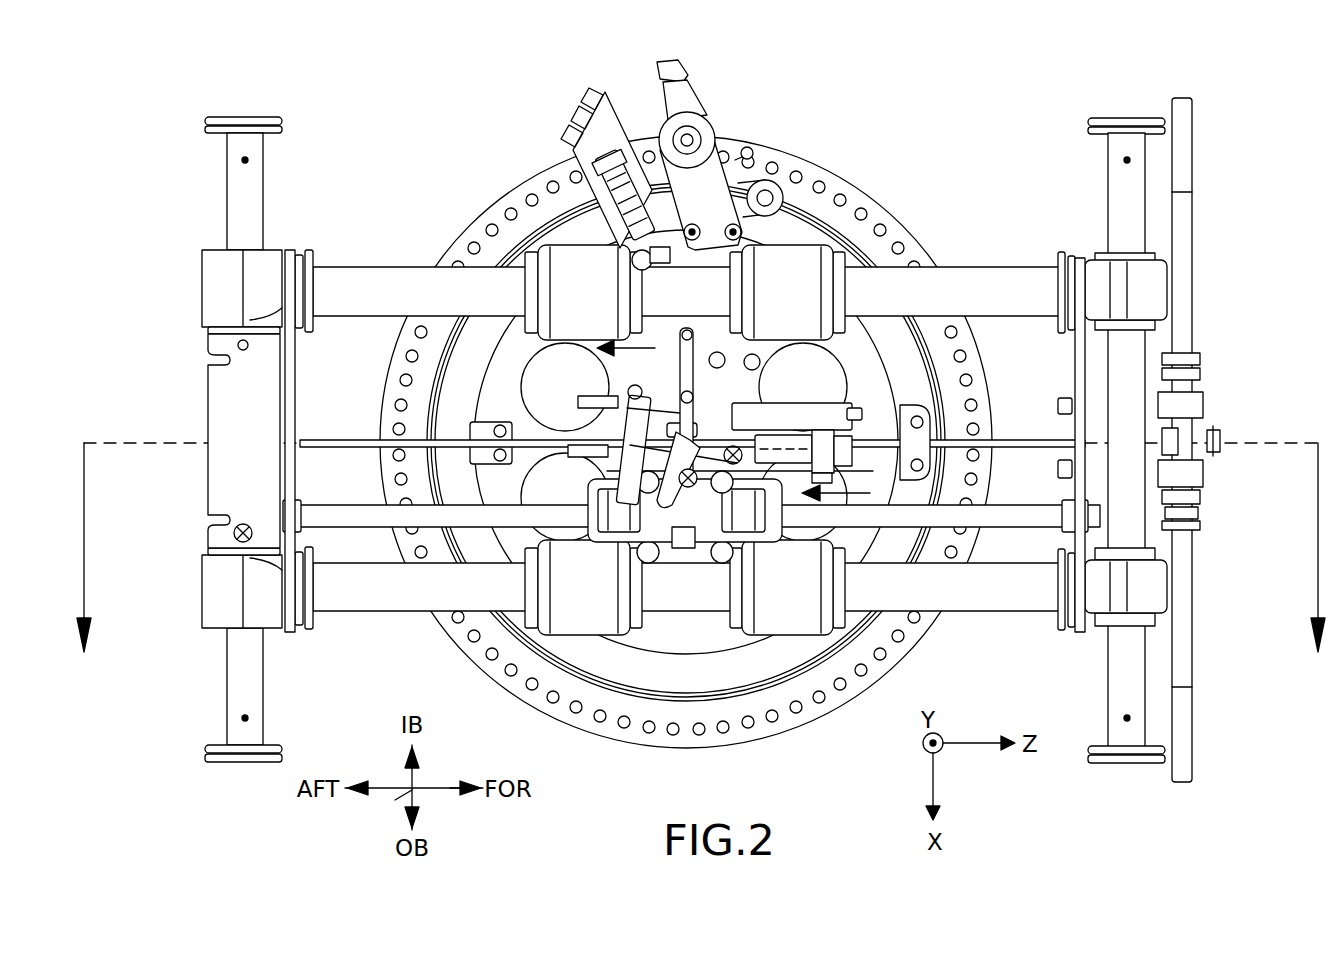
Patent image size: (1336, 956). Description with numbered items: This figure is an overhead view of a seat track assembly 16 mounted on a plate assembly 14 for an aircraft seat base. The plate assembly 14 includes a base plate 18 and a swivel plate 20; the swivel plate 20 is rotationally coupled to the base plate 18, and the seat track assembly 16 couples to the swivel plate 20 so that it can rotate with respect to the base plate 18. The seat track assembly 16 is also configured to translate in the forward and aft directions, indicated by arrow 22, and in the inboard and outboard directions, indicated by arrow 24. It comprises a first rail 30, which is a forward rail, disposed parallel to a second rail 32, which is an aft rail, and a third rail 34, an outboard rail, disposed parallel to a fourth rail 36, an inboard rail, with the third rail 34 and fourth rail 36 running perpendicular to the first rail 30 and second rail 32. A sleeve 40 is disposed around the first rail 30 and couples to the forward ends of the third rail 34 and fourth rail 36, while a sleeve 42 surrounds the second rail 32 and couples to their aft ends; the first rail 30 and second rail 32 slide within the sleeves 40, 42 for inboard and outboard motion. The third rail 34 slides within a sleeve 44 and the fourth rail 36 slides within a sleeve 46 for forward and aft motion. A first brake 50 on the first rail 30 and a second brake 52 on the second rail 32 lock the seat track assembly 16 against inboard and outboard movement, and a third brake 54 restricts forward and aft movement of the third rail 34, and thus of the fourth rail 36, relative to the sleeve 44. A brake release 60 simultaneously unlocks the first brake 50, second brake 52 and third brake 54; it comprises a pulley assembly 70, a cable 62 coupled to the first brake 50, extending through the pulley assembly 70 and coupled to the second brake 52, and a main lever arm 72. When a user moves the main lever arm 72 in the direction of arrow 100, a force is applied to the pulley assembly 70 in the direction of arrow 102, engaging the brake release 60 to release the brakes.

The plate assembly 14 is at (455, 152).
The seat track assembly 16 is at (126, 70).
The base plate 18 is at (495, 255).
The swivel plate 20 is at (492, 350).
The arrow 22 is at (455, 790).
The arrow 24 is at (400, 805).
The first rail 30 is at (1115, 205).
The second rail 32 is at (240, 197).
The third rail 34 is at (990, 600).
The fourth rail 36 is at (1015, 285).
The sleeve 40 is at (1150, 293).
The sleeve 42 is at (215, 285).
The sleeve 44 is at (812, 598).
The sleeve 46 is at (810, 298).
The first brake 50 is at (1190, 418).
The second brake 52 is at (222, 390).
The third brake 54 is at (681, 562).
The brake release 60 is at (868, 410).
The cable 62 is at (330, 440).
The pulley assembly 70 is at (800, 412).
The main lever arm 72 is at (700, 330).
The arrow 100 is at (660, 346).
The arrow 102 is at (862, 496).